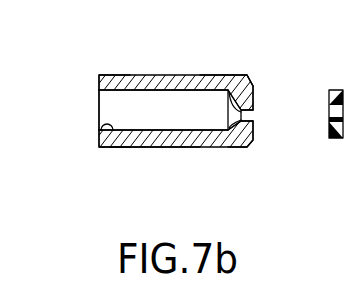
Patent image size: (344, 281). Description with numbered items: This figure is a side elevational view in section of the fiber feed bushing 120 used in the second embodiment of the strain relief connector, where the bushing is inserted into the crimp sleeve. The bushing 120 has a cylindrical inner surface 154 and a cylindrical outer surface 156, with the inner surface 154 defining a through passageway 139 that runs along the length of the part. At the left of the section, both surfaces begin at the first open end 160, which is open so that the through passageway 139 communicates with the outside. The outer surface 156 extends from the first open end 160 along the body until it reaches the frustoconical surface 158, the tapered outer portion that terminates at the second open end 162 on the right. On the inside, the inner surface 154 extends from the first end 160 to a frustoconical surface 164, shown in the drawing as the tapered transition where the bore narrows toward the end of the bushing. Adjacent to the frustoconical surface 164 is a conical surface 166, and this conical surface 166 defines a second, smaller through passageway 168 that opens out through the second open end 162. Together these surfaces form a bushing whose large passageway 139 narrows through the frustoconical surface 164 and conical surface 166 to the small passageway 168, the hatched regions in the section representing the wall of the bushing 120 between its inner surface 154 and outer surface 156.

The bushing 120 is at (227, 156).
The through passageway 139 is at (109, 110).
The inner surface 154 is at (98, 148).
The outer surface 156 is at (152, 148).
The frustoconical surface 158 is at (250, 80).
The first open end 160 is at (98, 82).
The second open end 162 is at (254, 121).
The frustoconical surface 164 is at (220, 117).
The conical surface 166 is at (256, 112).
The through passageway 168 is at (236, 86).